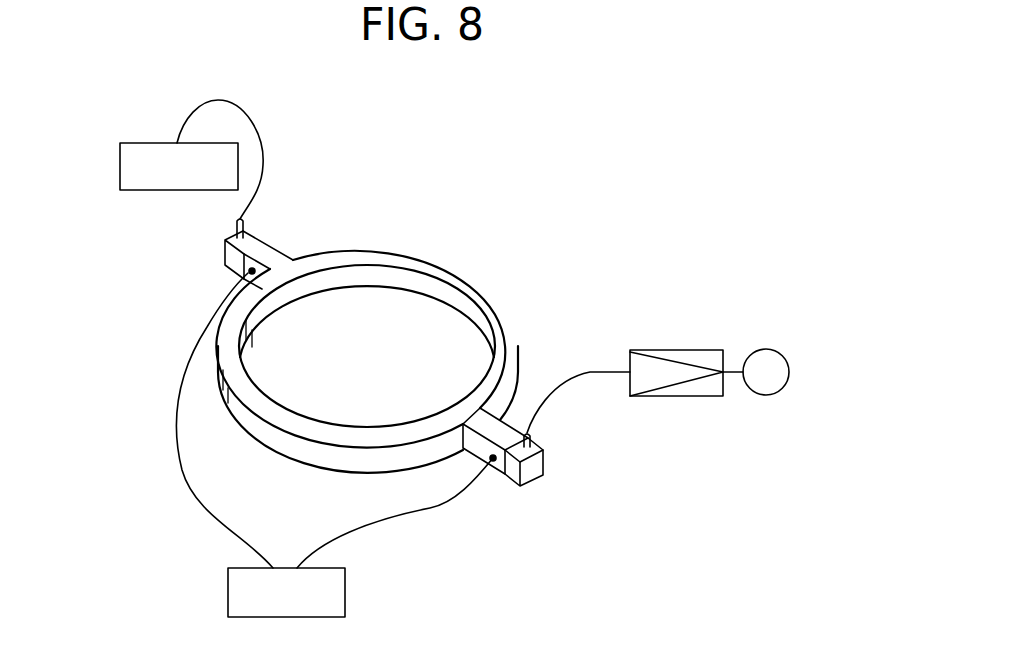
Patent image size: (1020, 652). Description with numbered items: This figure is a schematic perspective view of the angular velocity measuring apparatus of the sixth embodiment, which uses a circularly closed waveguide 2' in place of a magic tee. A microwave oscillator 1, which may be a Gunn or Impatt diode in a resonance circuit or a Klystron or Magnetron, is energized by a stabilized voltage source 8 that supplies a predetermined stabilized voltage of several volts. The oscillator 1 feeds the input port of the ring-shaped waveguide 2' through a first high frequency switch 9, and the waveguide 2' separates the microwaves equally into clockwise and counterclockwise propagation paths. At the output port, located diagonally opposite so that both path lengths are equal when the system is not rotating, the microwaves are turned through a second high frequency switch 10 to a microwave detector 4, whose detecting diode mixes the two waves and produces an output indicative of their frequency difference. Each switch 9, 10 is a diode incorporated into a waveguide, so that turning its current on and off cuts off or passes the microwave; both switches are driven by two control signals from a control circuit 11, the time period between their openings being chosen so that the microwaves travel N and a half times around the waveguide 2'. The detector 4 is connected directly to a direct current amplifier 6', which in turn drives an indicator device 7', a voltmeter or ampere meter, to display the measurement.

The microwave oscillator 1 is at (245, 239).
The circularly closed waveguide 2' is at (367, 344).
The microwave detector 4 is at (541, 485).
The direct current amplifier 6' is at (676, 349).
The indicator device 7' is at (766, 348).
The stabilized voltage source 8 is at (163, 190).
The first high frequency switch 9 is at (272, 257).
The second high frequency switch 10 is at (515, 428).
The control circuit 11 is at (347, 590).